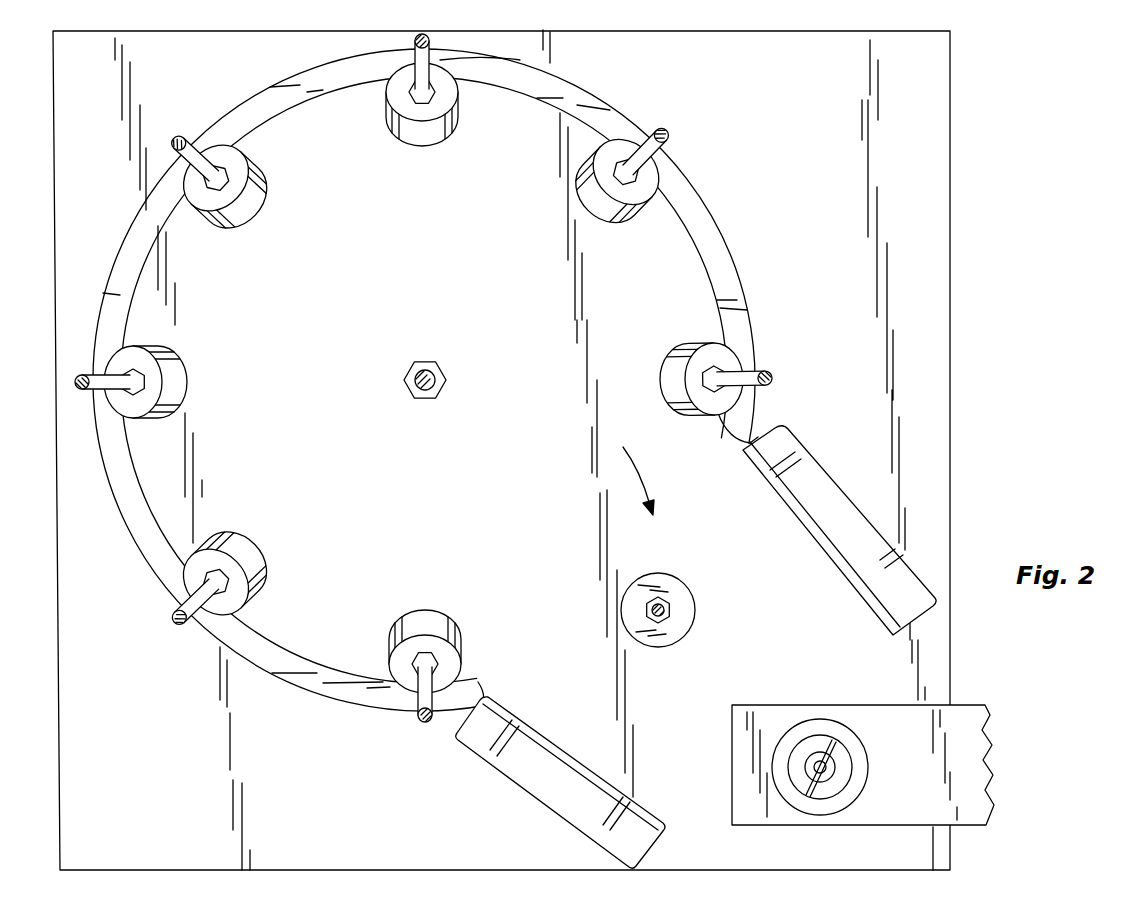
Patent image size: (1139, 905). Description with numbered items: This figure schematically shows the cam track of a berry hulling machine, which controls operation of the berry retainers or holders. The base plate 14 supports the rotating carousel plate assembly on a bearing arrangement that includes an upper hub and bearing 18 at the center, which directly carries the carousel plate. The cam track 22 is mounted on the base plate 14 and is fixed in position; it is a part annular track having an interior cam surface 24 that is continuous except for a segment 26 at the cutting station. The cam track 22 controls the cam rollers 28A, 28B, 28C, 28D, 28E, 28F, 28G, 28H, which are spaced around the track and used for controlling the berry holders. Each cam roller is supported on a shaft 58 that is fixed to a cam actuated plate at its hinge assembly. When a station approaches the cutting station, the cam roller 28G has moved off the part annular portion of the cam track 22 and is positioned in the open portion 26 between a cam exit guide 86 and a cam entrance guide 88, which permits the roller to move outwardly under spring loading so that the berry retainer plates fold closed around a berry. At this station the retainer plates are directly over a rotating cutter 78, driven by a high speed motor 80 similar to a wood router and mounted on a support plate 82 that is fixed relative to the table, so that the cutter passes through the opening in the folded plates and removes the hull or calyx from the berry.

The base plate 14 is at (935, 258).
The upper hub and bearing 18 is at (437, 370).
The cam track 22 is at (708, 225).
The interior cam surface 24 is at (554, 112).
The segment at cutting station 26 is at (631, 465).
The cam roller 28A is at (260, 546).
The cam roller 28B is at (189, 377).
The cam roller 28C is at (270, 212).
The cam roller 28D is at (437, 143).
The cam roller 28E is at (590, 220).
The cam roller 28F is at (672, 360).
The cam roller 28G is at (682, 578).
The cam roller 28H is at (431, 622).
The shaft 58 is at (206, 136).
The rotating cutter 78 is at (820, 740).
The high speed motor 80 is at (855, 737).
The support plate 82 is at (869, 812).
The cam exit guide 86 is at (790, 437).
The cam entrance guide 88 is at (530, 726).